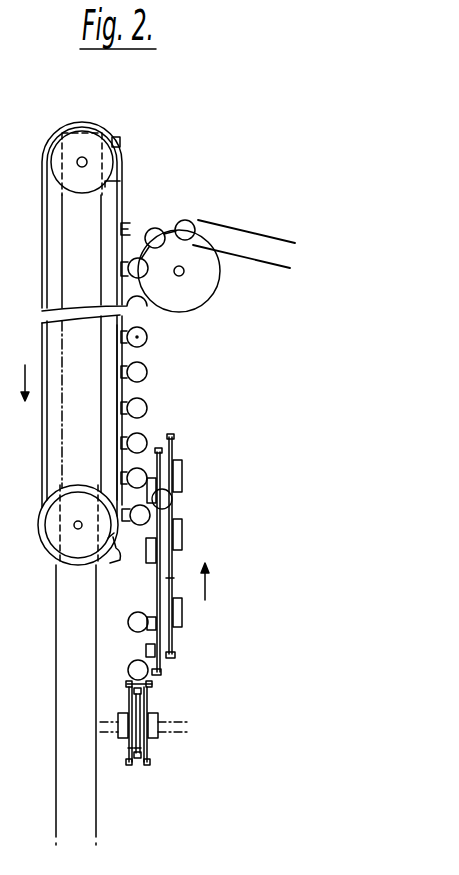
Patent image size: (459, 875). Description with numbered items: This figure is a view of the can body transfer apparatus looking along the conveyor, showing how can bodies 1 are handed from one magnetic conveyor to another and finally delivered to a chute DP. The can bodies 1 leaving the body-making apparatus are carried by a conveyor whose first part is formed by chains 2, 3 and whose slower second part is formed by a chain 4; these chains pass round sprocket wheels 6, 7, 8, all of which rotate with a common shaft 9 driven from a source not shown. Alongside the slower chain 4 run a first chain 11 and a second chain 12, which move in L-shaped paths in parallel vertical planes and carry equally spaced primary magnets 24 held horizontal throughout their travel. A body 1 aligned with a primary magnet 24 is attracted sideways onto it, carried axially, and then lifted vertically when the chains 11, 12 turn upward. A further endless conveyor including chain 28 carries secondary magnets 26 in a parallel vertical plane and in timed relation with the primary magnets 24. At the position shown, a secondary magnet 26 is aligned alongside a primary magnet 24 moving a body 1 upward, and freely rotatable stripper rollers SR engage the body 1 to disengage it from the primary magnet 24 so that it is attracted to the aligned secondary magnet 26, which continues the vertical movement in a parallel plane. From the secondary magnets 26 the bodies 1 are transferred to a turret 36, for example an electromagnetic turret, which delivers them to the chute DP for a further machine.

The chain 28 is at (123, 177).
The chute DP is at (264, 238).
The turret 36 is at (218, 300).
The can body 1 is at (144, 345).
The secondary transfer device 26 is at (120, 383).
The first chain 11 is at (173, 434).
The second chain 12 is at (164, 452).
The stripper rollers SR is at (174, 497).
The primary transfer device 24 is at (150, 612).
The sprocket wheel 8 is at (138, 714).
The shaft 9 is at (169, 721).
The sprocket wheel 6 is at (148, 751).
The chain 2 is at (129, 766).
The chain 3 is at (147, 766).
The chain 4 is at (137, 765).
The sprocket wheel 7 is at (127, 762).